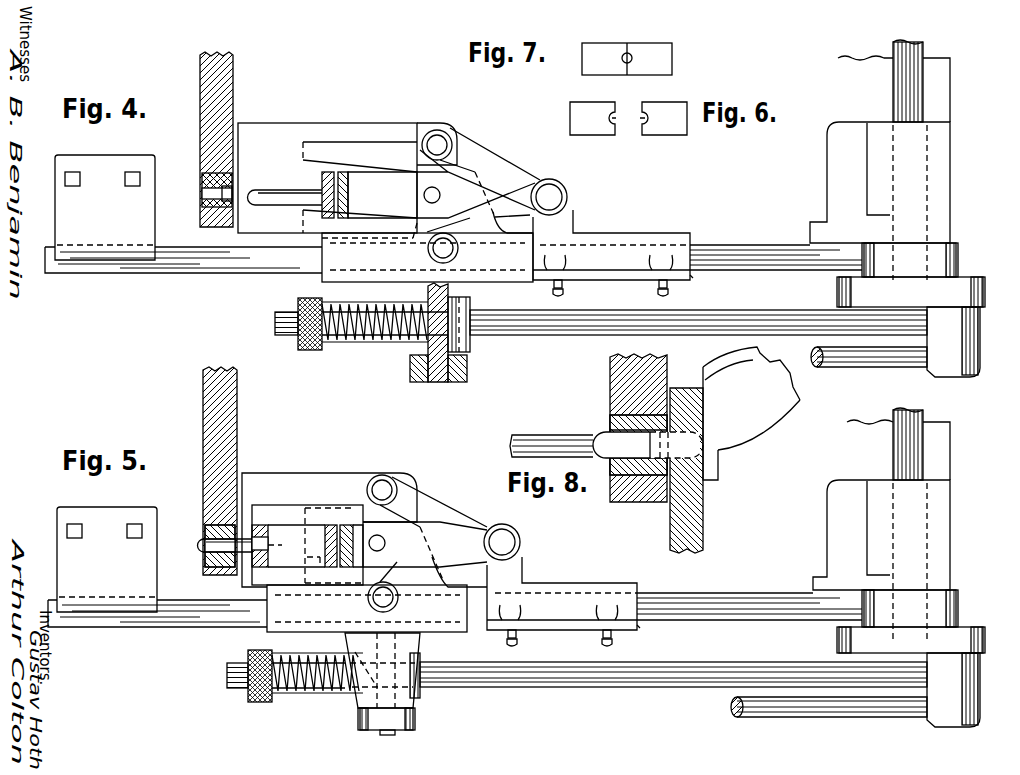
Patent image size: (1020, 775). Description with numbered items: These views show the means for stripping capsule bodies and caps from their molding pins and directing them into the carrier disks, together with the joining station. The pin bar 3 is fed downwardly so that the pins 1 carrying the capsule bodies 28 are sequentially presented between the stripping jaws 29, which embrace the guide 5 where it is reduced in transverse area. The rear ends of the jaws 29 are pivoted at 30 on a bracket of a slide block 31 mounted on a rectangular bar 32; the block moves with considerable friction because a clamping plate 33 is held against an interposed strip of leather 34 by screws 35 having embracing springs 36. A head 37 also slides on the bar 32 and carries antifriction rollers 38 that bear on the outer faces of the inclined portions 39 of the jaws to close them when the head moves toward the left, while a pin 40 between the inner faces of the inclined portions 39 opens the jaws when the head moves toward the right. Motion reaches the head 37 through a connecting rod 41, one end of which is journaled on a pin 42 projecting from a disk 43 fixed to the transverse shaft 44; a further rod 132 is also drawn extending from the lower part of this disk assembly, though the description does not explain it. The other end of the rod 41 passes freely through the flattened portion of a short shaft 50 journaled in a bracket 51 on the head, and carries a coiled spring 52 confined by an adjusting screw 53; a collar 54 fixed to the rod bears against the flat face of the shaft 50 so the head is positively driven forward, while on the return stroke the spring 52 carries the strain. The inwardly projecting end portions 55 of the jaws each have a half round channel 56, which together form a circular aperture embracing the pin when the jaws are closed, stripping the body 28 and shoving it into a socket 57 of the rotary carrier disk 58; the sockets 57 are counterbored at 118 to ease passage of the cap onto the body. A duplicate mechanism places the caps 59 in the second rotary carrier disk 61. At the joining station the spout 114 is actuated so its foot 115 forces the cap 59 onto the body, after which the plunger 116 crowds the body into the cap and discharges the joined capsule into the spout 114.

In FIG. 4, the pins 1 is at (275, 205).
In FIG. 5, the pins 1 is at (277, 540).
In FIG. 4, the pin bar 3 is at (329, 172).
In FIG. 5, the pin bar 3 is at (328, 527).
In FIG. 4, the guide 5 is at (349, 197).
In FIG. 5, the guide 5 is at (347, 527).
In FIG. 4, the capsule bodies 28 is at (269, 190).
In FIG. 8, the capsule bodies 28 is at (648, 445).
In FIG. 5, the capsule bodies 28 is at (200, 543).
In FIG. 4, the stripping jaws 29 is at (378, 150).
In FIG. 5, the stripping jaws 29 is at (300, 513).
In FIG. 4, the pivot 30 is at (567, 194).
In FIG. 5, the pivot 30 is at (520, 540).
In FIG. 4, the slide block 31 is at (626, 233).
In FIG. 5, the slide block 31 is at (581, 583).
In FIG. 4, the rectangular bar 32 is at (176, 273).
In FIG. 5, the rectangular bar 32 is at (205, 627).
In FIG. 4, the clamping plate 33 is at (620, 280).
In FIG. 5, the clamping plate 33 is at (577, 630).
In FIG. 4, the strip of leather 34 is at (692, 276).
In FIG. 5, the strip of leather 34 is at (640, 627).
In FIG. 4, the screws 35 is at (555, 290).
In FIG. 5, the screws 35 is at (509, 640).
In FIG. 4, the springs 36 is at (564, 289).
In FIG. 5, the springs 36 is at (518, 640).
In FIG. 4, the head 37 is at (462, 150).
In FIG. 5, the head 37 is at (405, 493).
In FIG. 4, the antifriction rollers 38 is at (450, 137).
In FIG. 5, the antifriction rollers 38 is at (392, 477).
In FIG. 4, the inclined portions 39 is at (447, 164).
In FIG. 5, the inclined portions 39 is at (388, 522).
In FIG. 4, the pin 40 is at (424, 196).
In FIG. 5, the pin 40 is at (380, 550).
In FIG. 4, the connecting rod 41 is at (567, 335).
In FIG. 5, the connecting rod 41 is at (583, 687).
In FIG. 4, the pin 42 is at (964, 377).
In FIG. 5, the pin 42 is at (870, 725).
In FIG. 4, the disk 43 is at (910, 277).
In FIG. 5, the disk 43 is at (911, 627).
In FIG. 4, the transverse shaft 44 is at (895, 91).
In FIG. 5, the transverse shaft 44 is at (897, 450).
In FIG. 4, the short shaft 50 is at (436, 382).
In FIG. 5, the short shaft 50 is at (395, 731).
In FIG. 4, the bracket 51 is at (425, 351).
In FIG. 5, the bracket 51 is at (367, 705).
In FIG. 4, the coiled spring 52 is at (352, 342).
In FIG. 5, the coiled spring 52 is at (310, 692).
In FIG. 4, the adjusting screw 53 is at (303, 350).
In FIG. 5, the adjusting screw 53 is at (255, 702).
In FIG. 4, the collar 54 is at (470, 349).
In FIG. 5, the collar 54 is at (420, 698).
In FIG. 7, the end portions 55 is at (582, 58).
In FIG. 6, the end portions 55 is at (570, 116).
In FIG. 7, the half round channel 56 is at (624, 54).
In FIG. 6, the half round channel 56 is at (628, 120).
In FIG. 4, the sockets 57 is at (202, 193).
In FIG. 4, the rotary carrier disk 58 is at (200, 57).
In FIG. 8, the rotary carrier disk 58 is at (610, 371).
In FIG. 5, the rotary carrier disk 58 is at (199, 471).
In FIG. 8, the caps 59 is at (675, 445).
In FIG. 8, the rotary carrier disk 61 is at (705, 533).
In FIG. 8, the spout 114 is at (751, 398).
In FIG. 8, the foot 115 is at (718, 468).
In FIG. 8, the plunger 116 is at (552, 435).
In FIG. 4, the counterbore 118 is at (229, 189).
In FIG. 4, the rod 132 is at (869, 367).
In FIG. 5, the rod 132 is at (774, 717).